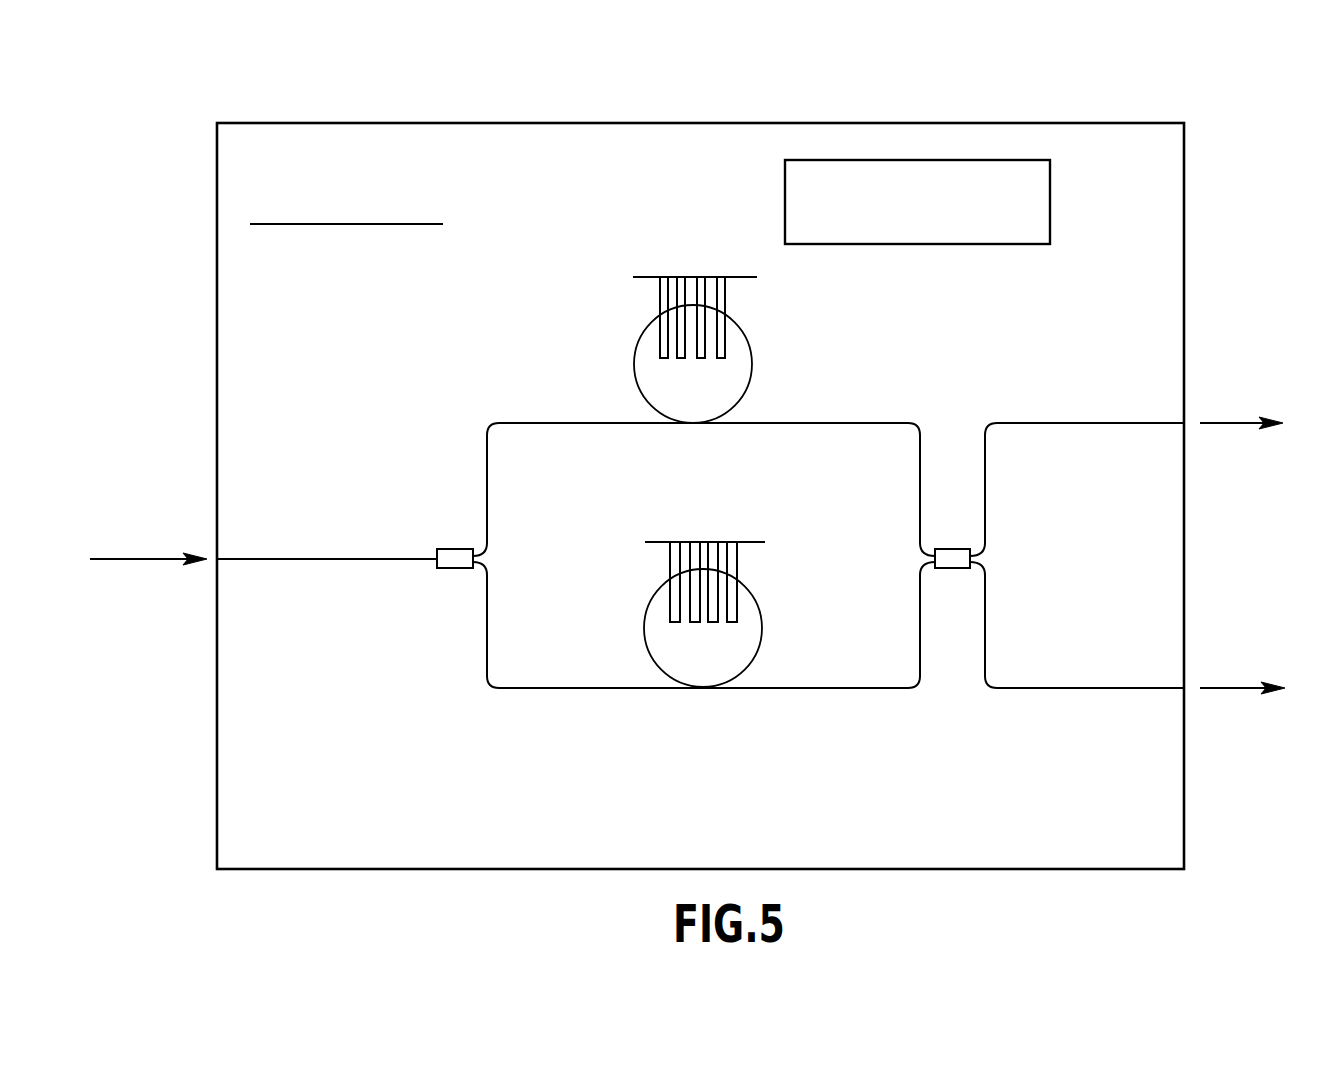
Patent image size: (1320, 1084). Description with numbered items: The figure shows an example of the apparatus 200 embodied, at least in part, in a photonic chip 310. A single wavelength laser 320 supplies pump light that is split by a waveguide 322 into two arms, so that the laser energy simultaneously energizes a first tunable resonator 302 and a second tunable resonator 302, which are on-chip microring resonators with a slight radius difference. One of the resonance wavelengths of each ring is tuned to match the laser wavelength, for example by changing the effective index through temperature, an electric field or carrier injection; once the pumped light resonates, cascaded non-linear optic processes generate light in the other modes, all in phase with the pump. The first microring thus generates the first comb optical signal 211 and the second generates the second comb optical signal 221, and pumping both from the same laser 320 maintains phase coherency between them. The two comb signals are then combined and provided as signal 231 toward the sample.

The photonic device 200 is at (1222, 100).
The photonic chip 310 is at (650, 135).
The laser 320 is at (134, 558).
The waveguide 322 is at (472, 678).
The first comb optical signal 211 is at (877, 423).
The second comb optical signal 221 is at (877, 688).
The tunable resonator 302 is at (590, 283).
The signal 231 is at (1228, 423).